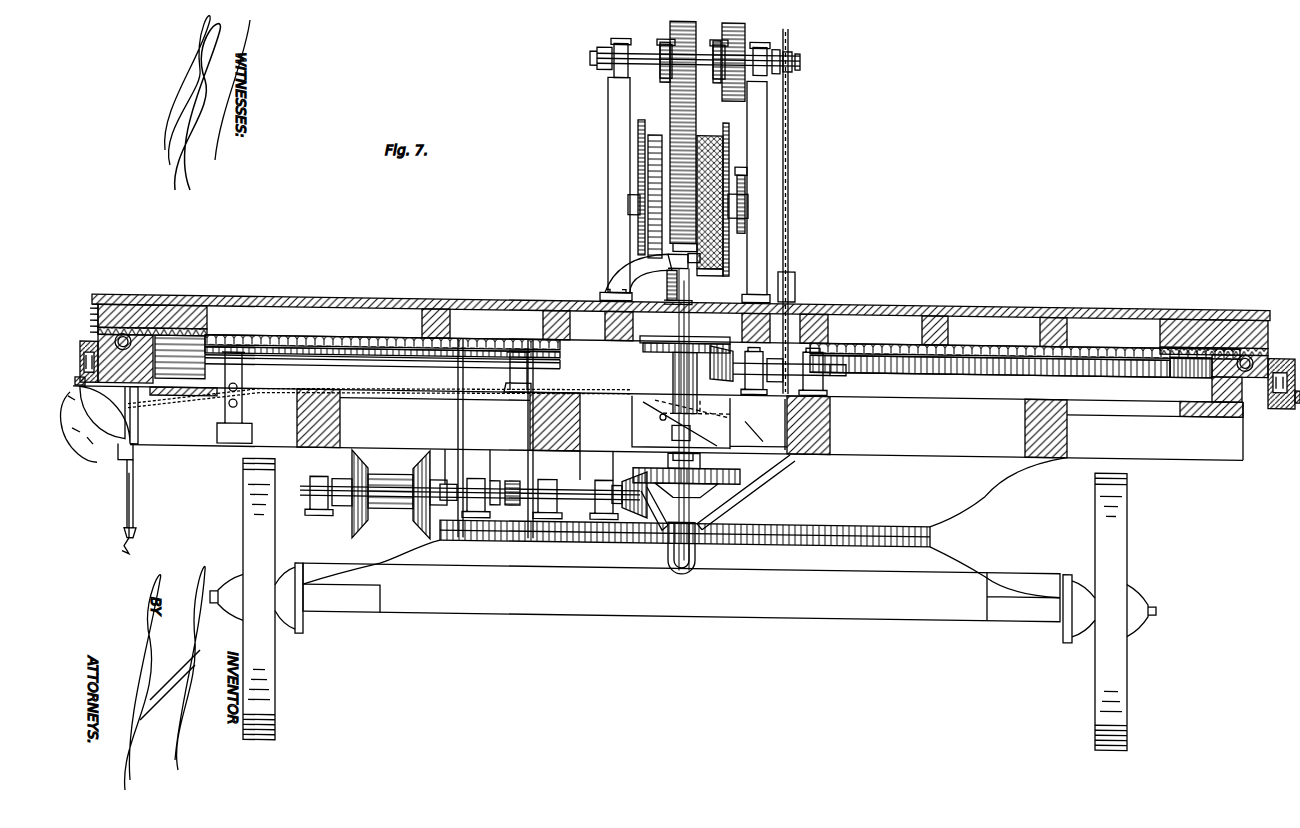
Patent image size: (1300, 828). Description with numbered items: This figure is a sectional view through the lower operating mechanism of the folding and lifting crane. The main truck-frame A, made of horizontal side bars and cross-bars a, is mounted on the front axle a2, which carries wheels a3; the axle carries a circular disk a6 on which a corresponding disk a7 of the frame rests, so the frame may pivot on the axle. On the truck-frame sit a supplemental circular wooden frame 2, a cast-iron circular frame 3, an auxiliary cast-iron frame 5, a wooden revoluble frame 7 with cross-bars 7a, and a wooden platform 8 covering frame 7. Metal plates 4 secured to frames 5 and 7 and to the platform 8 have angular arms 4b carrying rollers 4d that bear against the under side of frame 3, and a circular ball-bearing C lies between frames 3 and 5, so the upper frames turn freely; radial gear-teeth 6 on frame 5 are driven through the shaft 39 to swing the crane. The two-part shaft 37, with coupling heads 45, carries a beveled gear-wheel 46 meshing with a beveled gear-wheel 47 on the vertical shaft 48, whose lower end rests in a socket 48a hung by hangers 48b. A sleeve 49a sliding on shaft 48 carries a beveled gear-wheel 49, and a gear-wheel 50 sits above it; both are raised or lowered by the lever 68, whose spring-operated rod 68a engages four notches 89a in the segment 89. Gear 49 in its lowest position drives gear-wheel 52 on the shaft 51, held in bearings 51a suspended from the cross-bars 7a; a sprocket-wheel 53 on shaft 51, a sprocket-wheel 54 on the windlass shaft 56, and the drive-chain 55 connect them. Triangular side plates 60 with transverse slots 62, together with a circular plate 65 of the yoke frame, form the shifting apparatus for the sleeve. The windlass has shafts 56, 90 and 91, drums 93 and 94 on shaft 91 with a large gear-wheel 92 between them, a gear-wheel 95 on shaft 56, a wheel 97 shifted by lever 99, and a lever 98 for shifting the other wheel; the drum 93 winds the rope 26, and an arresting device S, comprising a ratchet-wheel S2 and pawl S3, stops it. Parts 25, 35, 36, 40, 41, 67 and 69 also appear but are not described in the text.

The supplemental circular wooden frame 2 is at (1210, 389).
The circular frame 3 is at (1165, 360).
The metal plates 4 is at (1264, 312).
The angular arms 4b is at (1283, 352).
The rollers 4d is at (1285, 400).
The auxiliary circular frame 5 is at (995, 338).
The radial gear-teeth 6 is at (560, 352).
The circular revoluble frame 7 is at (1160, 320).
The cross-bars 7a is at (540, 327).
The platform 8 is at (1098, 308).
The standard 25 is at (608, 128).
The rope or cord 26 is at (736, 199).
The bevel gear 35 is at (418, 524).
The bevel gear 36 is at (362, 525).
The shaft 37 is at (310, 500).
The shaft 39 is at (382, 372).
The frame member 40 is at (458, 420).
The upright 41 is at (200, 380).
The coupling heads or clutches 45 is at (514, 483).
The beveled gear-wheel 46 is at (640, 520).
The beveled gear-wheel 47 is at (740, 490).
The vertical shaft 48 is at (678, 318).
The socket 48a is at (665, 522).
The brace-rods or hangers 48b is at (745, 505).
The beveled gear-wheel 49 is at (725, 330).
The sleeve 49a is at (673, 360).
The beveled gear-wheel 50 is at (700, 304).
The shaft 51 is at (790, 377).
The bearings 51a is at (827, 385).
The gear-wheel 52 is at (722, 382).
The sprocket-wheel 53 is at (772, 382).
The sprocket-wheel 54 is at (790, 40).
The drive-chain 55 is at (790, 142).
The shaft 56 is at (630, 50).
The triangular side plates 60 is at (652, 400).
The transverse slots 62 is at (709, 406).
The circular plate 65 is at (696, 477).
The chain 67 is at (275, 395).
The lever 68 is at (135, 492).
The sliding spring-operated rod 68a is at (127, 490).
The curved arm 69 is at (660, 232).
The segmental attachment 89 is at (103, 415).
The notches or recesses 89a is at (100, 454).
The shaft 90 is at (597, 53).
The shaft 91 is at (628, 200).
The large gear-wheel 92 is at (694, 110).
The drum 93 is at (728, 244).
The drum 94 is at (640, 158).
The gear-wheel 95 is at (745, 28).
The wheel 97 is at (683, 126).
The lever 98 is at (722, 42).
The lever 99 is at (660, 44).
The arresting device S is at (748, 202).
The ratchet-wheel S2 is at (749, 222).
The pawl S3 is at (747, 172).
The main truck-frame A is at (1155, 430).
The circular ball-bearing C is at (1243, 364).
The side bars and cross-bars a is at (530, 427).
The front axle a2 is at (681, 592).
The wheels a3 is at (262, 690).
The circular disk a6 is at (875, 543).
The circular disk a7 is at (875, 524).